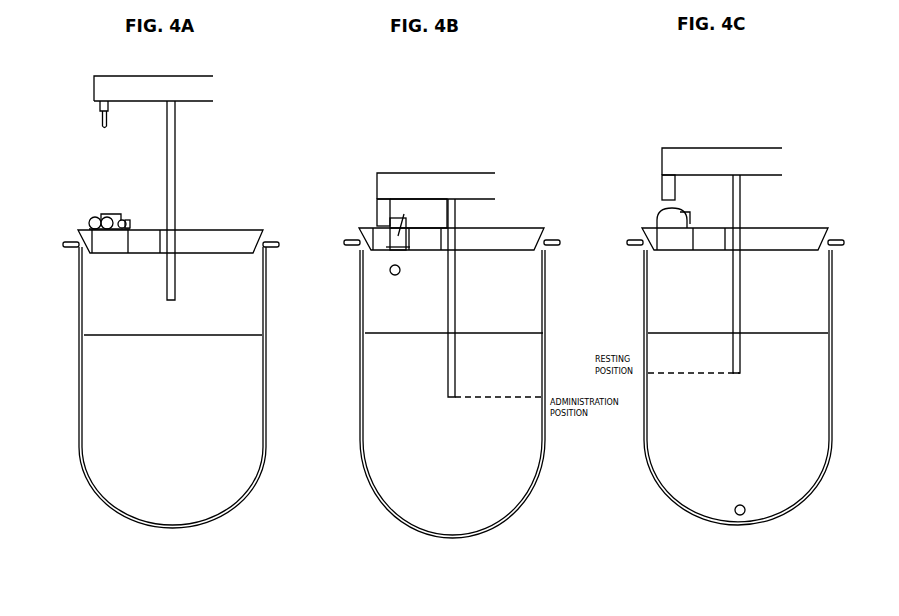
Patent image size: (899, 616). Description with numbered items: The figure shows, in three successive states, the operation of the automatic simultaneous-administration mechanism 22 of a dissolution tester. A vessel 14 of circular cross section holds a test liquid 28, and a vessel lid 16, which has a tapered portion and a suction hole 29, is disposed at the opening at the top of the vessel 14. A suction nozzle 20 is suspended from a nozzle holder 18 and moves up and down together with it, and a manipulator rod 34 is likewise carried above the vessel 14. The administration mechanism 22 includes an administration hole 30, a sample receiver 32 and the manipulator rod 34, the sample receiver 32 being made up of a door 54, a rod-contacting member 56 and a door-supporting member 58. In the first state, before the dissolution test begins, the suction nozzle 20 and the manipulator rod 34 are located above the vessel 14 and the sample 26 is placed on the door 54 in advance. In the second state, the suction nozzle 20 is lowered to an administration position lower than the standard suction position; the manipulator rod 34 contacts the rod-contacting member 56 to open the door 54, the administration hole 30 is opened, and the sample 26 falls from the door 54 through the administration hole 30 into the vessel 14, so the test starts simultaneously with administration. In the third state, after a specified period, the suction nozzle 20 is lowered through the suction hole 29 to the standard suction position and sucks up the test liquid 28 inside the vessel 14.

In FIG. 4A, the vessel 14 is at (268, 344).
In FIG. 4B, the vessel 14 is at (360, 442).
In FIG. 4C, the vessel 14 is at (645, 444).
In FIG. 4A, the vessel lid 16 is at (205, 229).
In FIG. 4B, the vessel lid 16 is at (527, 228).
In FIG. 4C, the vessel lid 16 is at (812, 228).
In FIG. 4A, the nozzle holder 18 is at (98, 90).
In FIG. 4B, the nozzle holder 18 is at (390, 187).
In FIG. 4C, the nozzle holder 18 is at (662, 162).
In FIG. 4A, the suction nozzle 20 is at (175, 143).
In FIG. 4B, the suction nozzle 20 is at (448, 305).
In FIG. 4C, the suction nozzle 20 is at (733, 358).
In FIG. 4A, the automatic simultaneous-administration mechanism 22 is at (127, 161).
In FIG. 4B, the automatic simultaneous-administration mechanism 22 is at (418, 213).
In FIG. 4C, the automatic simultaneous-administration mechanism 22 is at (717, 205).
In FIG. 4A, the sample 26 is at (96, 217).
In FIG. 4B, the sample 26 is at (390, 273).
In FIG. 4C, the sample 26 is at (735, 510).
In FIG. 4A, the test liquid 28 is at (242, 390).
In FIG. 4B, the test liquid 28 is at (500, 478).
In FIG. 4C, the test liquid 28 is at (692, 342).
In FIG. 4A, the suction hole 29 is at (176, 252).
In FIG. 4B, the suction hole 29 is at (456, 252).
In FIG. 4C, the suction hole 29 is at (741, 252).
In FIG. 4A, the administration hole 30 is at (94, 250).
In FIG. 4B, the administration hole 30 is at (375, 258).
In FIG. 4A, the sample receiver 32 is at (64, 187).
In FIG. 4B, the sample receiver 32 is at (331, 178).
In FIG. 4C, the sample receiver 32 is at (645, 216).
In FIG. 4A, the manipulator rod 34 is at (110, 119).
In FIG. 4B, the manipulator rod 34 is at (395, 218).
In FIG. 4C, the manipulator rod 34 is at (668, 192).
In FIG. 4A, the door 54 is at (93, 223).
In FIG. 4B, the door 54 is at (384, 247).
In FIG. 4A, the rod-contacting member 56 is at (110, 214).
In FIG. 4B, the rod-contacting member 56 is at (393, 243).
In FIG. 4A, the door-supporting member 58 is at (125, 220).
In FIG. 4B, the door-supporting member 58 is at (400, 222).